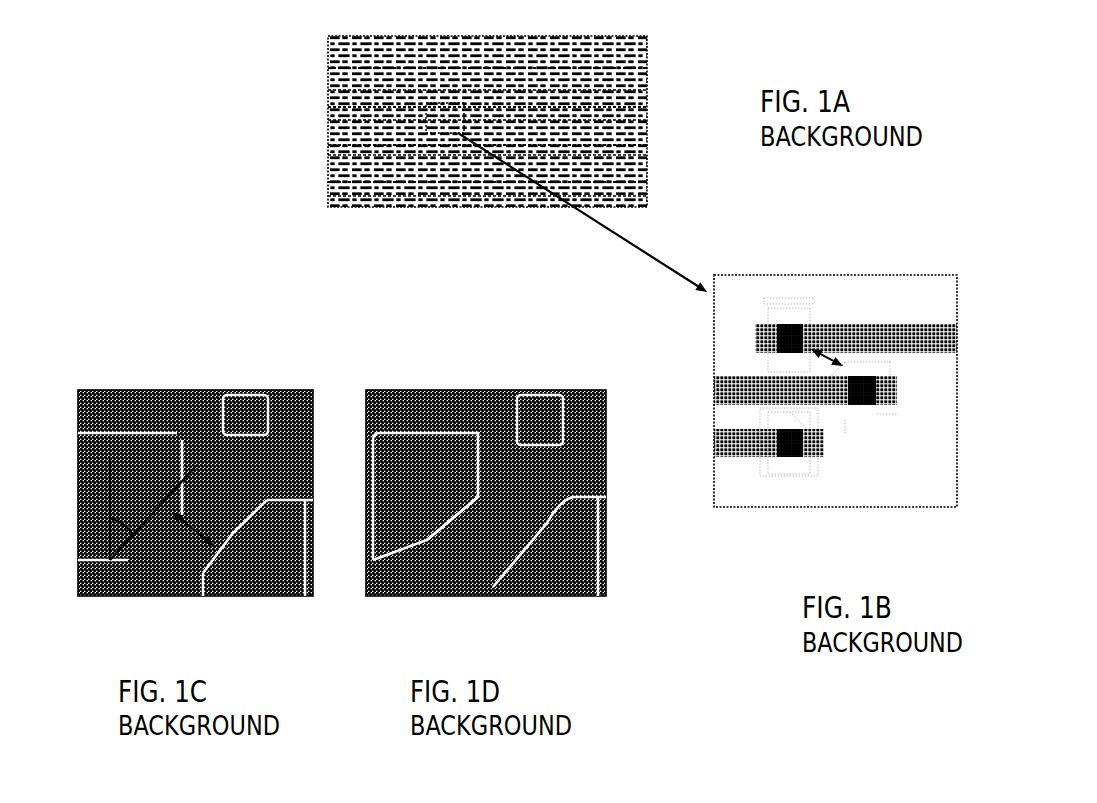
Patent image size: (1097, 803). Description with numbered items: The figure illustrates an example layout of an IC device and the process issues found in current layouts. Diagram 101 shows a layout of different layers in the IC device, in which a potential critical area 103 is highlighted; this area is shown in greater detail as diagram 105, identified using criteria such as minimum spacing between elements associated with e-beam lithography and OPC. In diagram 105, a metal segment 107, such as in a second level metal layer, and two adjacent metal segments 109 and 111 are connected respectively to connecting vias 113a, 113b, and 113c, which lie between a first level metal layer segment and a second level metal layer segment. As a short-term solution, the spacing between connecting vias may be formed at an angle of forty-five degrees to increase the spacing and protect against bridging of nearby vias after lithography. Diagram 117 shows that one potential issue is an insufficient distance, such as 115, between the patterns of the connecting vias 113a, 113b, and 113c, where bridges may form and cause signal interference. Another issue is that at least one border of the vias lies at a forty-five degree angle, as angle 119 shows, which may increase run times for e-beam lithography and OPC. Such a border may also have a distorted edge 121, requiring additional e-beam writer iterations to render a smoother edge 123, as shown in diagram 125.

In FIG. 1A, the diagram 101 is at (647, 85).
In FIG. 1A, the potential critical area 103 is at (449, 154).
In FIG. 1B, the diagram 105 is at (957, 305).
In FIG. 1B, the metal segment 107 is at (720, 411).
In FIG. 1B, the adjacent metal segment 109 is at (859, 315).
In FIG. 1B, the adjacent metal segment 111 is at (748, 469).
In FIG. 1B, the connecting via 113a is at (902, 418).
In FIG. 1C, the connecting via 113a is at (284, 486).
In FIG. 1B, the connecting via 113b is at (827, 335).
In FIG. 1C, the connecting via 113b is at (98, 421).
In FIG. 1B, the connecting via 113c is at (825, 471).
In FIG. 1B, the distance 115 is at (809, 363).
In FIG. 1C, the distance 115 is at (182, 549).
In FIG. 1C, the diagram 117 is at (236, 597).
In FIG. 1C, the angle 119 is at (129, 503).
In FIG. 1C, the distorted edge 121 is at (142, 549).
In FIG. 1D, the smoother edge 123 is at (447, 549).
In FIG. 1D, the diagram 125 is at (410, 390).